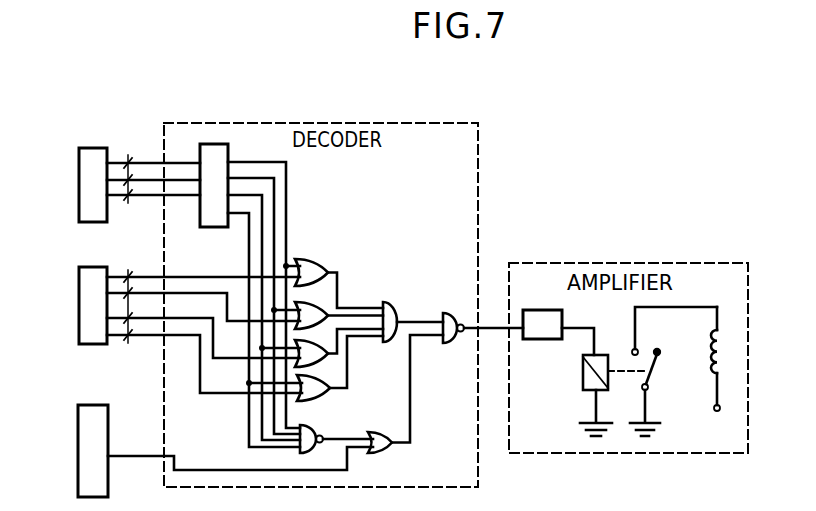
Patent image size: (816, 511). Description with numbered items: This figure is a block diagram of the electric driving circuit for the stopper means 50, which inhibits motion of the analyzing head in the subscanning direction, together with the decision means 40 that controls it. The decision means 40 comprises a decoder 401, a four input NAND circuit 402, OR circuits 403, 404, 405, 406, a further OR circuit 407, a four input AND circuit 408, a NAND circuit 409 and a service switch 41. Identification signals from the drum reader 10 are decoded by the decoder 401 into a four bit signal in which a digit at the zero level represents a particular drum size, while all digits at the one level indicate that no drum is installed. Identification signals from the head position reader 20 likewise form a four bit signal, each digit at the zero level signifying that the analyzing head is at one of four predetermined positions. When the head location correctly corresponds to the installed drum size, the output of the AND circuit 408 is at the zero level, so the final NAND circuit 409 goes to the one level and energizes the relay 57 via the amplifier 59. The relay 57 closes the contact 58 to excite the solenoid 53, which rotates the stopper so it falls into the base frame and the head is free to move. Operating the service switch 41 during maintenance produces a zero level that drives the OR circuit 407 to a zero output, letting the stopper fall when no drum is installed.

The drum reader 10 is at (79, 186).
The head position reader 20 is at (79, 311).
The service switch 41 is at (78, 452).
The decision means 40 is at (379, 122).
The decoder 401 is at (219, 152).
The four input NAND circuit 402 is at (314, 427).
The OR circuit 403 is at (312, 258).
The OR circuit 404 is at (323, 301).
The OR circuit 405 is at (336, 358).
The OR circuit 406 is at (336, 396).
The OR circuit 407 is at (380, 453).
The four input AND circuit 408 is at (388, 309).
The NAND circuit 409 is at (450, 344).
The stopper means 50 is at (624, 262).
The amplifier 59 is at (548, 310).
The relay 57 is at (583, 375).
The contact 58 is at (652, 370).
The solenoid 53 is at (724, 362).